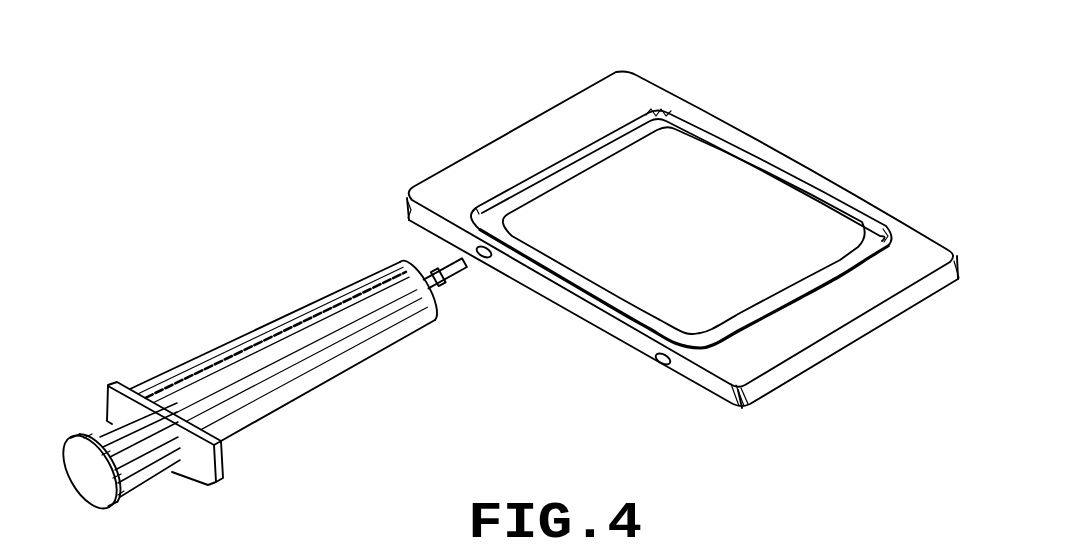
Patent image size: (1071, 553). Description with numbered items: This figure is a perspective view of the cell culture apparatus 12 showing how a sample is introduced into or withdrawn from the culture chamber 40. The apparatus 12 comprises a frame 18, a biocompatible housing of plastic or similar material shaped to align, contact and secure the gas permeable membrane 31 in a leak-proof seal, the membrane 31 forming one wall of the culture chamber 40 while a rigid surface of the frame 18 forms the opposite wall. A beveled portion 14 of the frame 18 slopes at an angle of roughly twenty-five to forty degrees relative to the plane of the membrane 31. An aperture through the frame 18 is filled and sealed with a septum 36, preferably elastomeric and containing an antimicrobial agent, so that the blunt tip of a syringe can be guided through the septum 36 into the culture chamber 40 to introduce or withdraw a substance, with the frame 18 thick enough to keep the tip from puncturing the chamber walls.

The cell culture apparatus 12 is at (768, 95).
The beveled portion 14 is at (707, 127).
The frame 18 is at (641, 87).
The gas permeable membrane 31 is at (750, 187).
The septum 36 is at (486, 258).
The culture chamber 40 is at (791, 219).